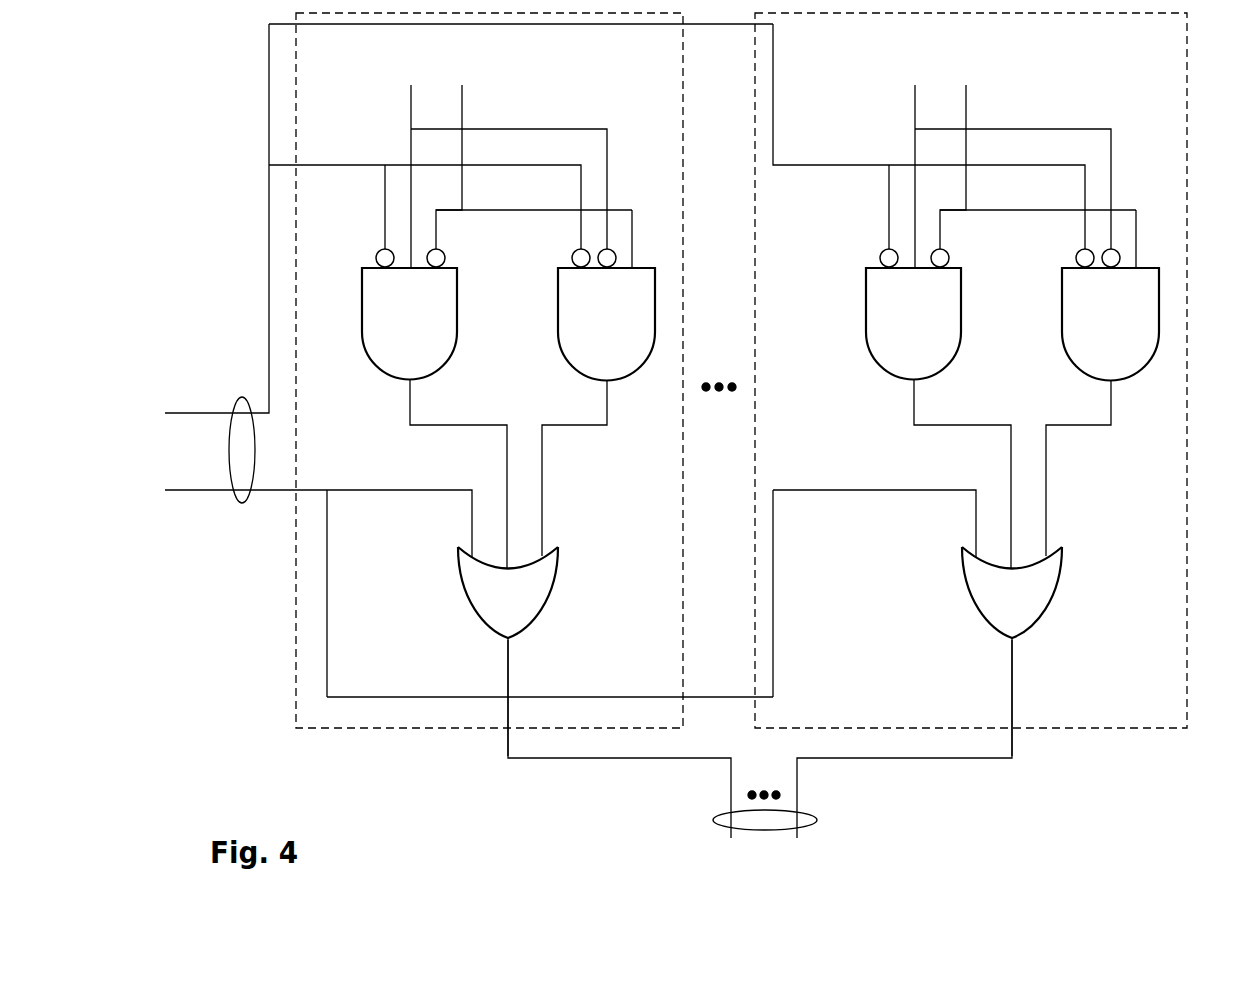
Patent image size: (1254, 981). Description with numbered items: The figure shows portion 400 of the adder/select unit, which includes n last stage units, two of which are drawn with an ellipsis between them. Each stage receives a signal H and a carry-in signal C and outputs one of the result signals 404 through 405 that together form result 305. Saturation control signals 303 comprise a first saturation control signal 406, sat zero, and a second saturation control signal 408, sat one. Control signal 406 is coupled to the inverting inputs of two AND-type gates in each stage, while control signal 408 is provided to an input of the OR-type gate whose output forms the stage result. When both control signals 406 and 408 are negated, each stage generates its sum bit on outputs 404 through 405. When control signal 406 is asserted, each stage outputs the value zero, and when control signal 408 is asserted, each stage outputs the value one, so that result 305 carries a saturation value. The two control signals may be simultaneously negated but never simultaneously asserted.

The portion of adder/select unit 400 is at (1142, 832).
The saturation control signals 303 is at (242, 398).
The first saturation control signal 406 is at (222, 425).
The second saturation control signal 408 is at (220, 488).
The result signal 404 is at (509, 672).
The result signal 405 is at (1012, 688).
The result 305 is at (713, 820).